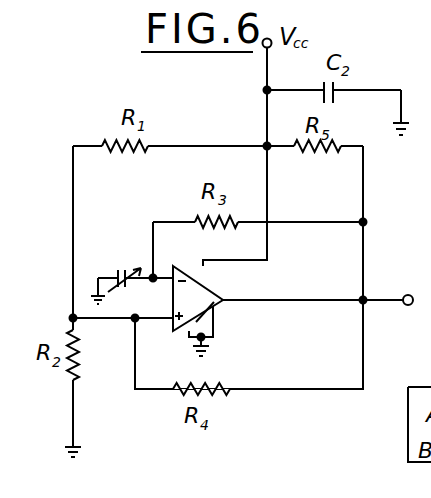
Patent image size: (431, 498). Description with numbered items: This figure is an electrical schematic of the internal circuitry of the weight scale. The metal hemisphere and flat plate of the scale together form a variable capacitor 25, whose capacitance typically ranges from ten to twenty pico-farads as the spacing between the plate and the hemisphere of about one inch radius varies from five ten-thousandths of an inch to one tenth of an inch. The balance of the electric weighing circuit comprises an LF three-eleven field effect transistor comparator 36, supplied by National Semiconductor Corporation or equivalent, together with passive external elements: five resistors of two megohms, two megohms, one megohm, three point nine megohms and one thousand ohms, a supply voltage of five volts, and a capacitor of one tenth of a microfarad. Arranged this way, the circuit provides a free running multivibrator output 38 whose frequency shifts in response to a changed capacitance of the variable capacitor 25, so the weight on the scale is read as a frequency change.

The variable capacitor 25 is at (127, 265).
The field effect transistor comparator 36 is at (199, 302).
The multivibrator output 38 is at (408, 295).